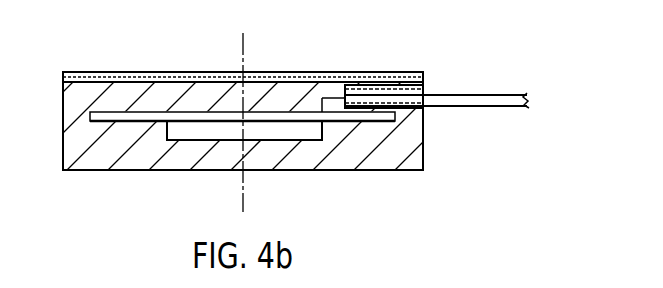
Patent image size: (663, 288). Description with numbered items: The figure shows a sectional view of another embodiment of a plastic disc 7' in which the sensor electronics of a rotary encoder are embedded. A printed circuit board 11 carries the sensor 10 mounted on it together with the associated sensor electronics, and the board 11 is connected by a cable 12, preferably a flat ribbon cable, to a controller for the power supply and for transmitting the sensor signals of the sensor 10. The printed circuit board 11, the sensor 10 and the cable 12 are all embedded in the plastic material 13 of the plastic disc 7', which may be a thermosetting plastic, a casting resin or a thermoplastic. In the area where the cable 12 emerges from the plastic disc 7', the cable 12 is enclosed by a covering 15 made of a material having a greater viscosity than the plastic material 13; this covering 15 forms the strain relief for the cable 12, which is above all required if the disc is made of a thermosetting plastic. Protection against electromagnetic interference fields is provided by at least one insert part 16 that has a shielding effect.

The plastic disc 7' is at (243, 150).
The sensor 10 is at (203, 132).
The printed circuit board 11 is at (105, 115).
The cable 12 is at (493, 98).
The plastic material 13 is at (313, 158).
The covering 15 is at (426, 84).
The insert part 16 is at (299, 72).